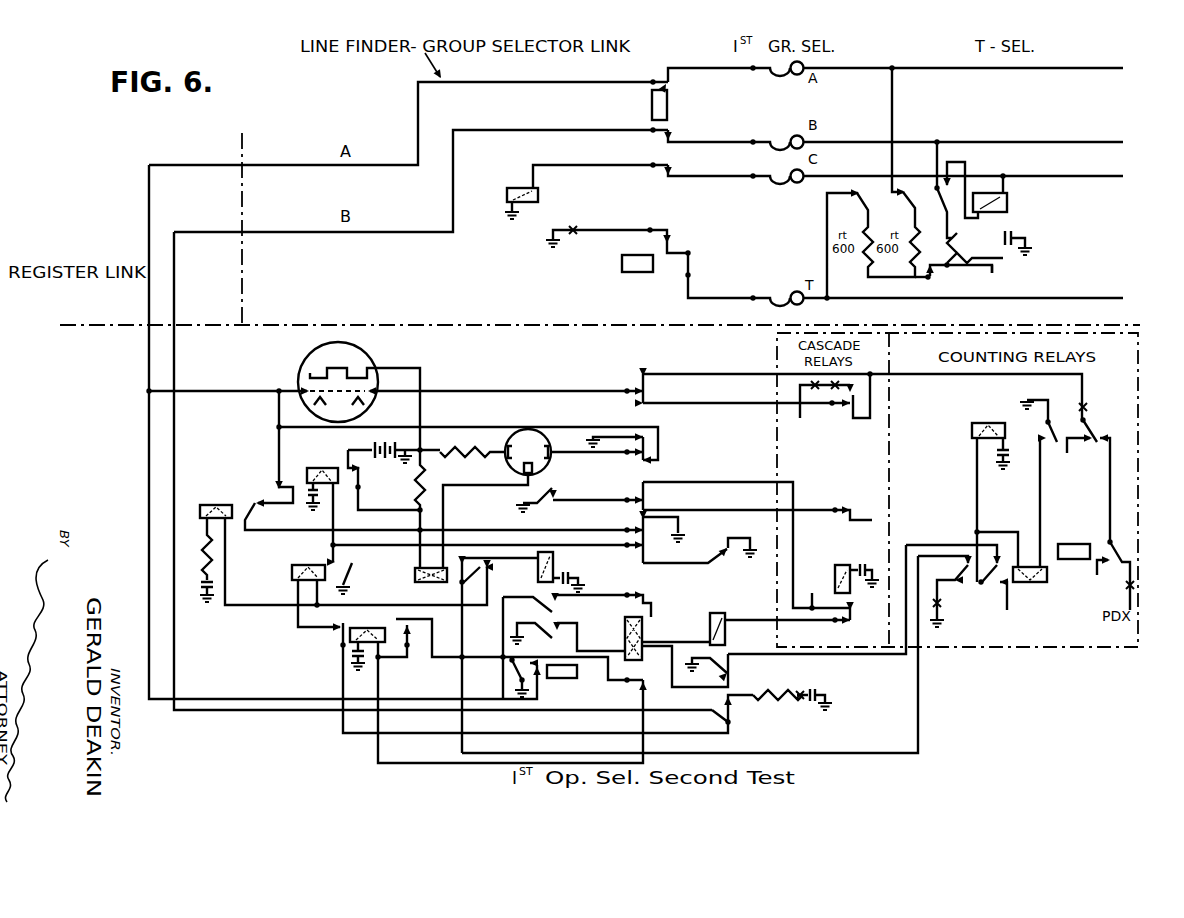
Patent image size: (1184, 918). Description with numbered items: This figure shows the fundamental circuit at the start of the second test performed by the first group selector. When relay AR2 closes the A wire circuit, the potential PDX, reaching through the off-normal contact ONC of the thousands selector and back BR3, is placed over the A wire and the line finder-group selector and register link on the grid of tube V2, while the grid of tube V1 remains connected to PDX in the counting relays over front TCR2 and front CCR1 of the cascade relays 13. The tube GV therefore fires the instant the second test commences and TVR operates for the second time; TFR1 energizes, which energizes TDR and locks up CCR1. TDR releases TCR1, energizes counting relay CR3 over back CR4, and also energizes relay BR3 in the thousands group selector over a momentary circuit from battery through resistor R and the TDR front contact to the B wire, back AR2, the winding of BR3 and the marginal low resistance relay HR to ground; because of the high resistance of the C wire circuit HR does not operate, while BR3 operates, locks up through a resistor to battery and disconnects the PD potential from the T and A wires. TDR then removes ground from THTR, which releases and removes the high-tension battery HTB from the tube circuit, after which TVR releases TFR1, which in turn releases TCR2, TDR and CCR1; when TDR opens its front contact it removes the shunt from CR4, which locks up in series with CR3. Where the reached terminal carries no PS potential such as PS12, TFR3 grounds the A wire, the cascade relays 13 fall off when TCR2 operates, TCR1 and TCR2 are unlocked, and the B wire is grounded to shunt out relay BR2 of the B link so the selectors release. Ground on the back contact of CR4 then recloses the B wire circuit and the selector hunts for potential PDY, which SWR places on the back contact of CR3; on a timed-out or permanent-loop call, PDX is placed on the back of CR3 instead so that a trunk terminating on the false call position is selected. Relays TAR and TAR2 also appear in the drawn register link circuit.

The cascade relays 13 is at (778, 464).
The relay AR2 of the first group selector AR2 is at (676, 105).
The marginal low resistance relay HR is at (521, 194).
The relay BR2 of the B-link BR2 is at (637, 254).
The relay BR3 of the thousands group selector BR3 is at (987, 192).
The contact ONC is at (958, 263).
The potential PDX is at (988, 279).
The tube V1 is at (359, 393).
The tube V2 is at (330, 369).
The relay THTR is at (321, 480).
The battery HTB is at (394, 446).
The tube GV is at (506, 465).
The relay TVR is at (431, 584).
The relay TAR2 is at (213, 543).
The relay TAR is at (308, 562).
The relay TCR1 is at (367, 639).
The relay TFR1 is at (565, 572).
The relay TFR3 is at (563, 683).
The relay TCR2 is at (611, 638).
The relay TDR is at (701, 629).
The resistor R is at (792, 690).
The cascade relay CCR1 is at (837, 578).
The contacts PS12 is at (829, 406).
The counting relay CR3 is at (991, 437).
The counting relay CR4 is at (1030, 585).
The relay SWR is at (1072, 542).
The potential PDY is at (1109, 576).